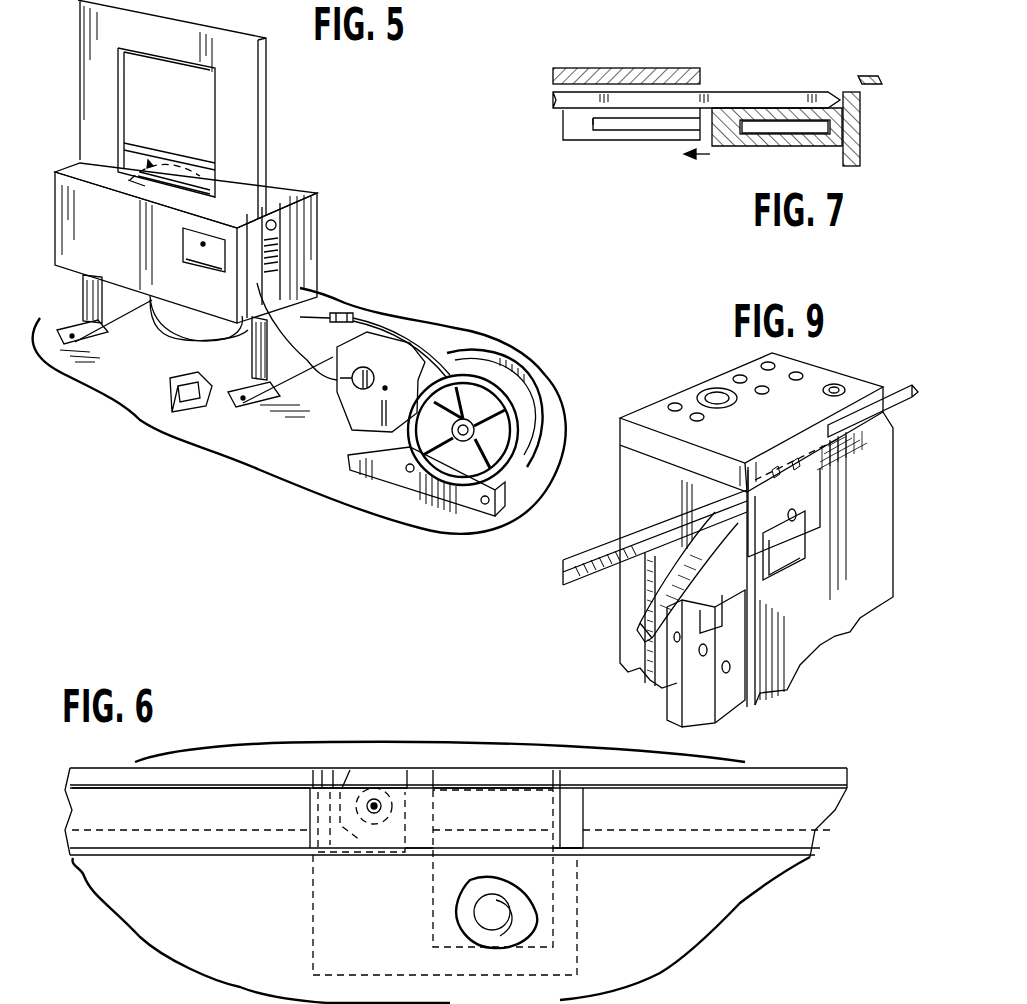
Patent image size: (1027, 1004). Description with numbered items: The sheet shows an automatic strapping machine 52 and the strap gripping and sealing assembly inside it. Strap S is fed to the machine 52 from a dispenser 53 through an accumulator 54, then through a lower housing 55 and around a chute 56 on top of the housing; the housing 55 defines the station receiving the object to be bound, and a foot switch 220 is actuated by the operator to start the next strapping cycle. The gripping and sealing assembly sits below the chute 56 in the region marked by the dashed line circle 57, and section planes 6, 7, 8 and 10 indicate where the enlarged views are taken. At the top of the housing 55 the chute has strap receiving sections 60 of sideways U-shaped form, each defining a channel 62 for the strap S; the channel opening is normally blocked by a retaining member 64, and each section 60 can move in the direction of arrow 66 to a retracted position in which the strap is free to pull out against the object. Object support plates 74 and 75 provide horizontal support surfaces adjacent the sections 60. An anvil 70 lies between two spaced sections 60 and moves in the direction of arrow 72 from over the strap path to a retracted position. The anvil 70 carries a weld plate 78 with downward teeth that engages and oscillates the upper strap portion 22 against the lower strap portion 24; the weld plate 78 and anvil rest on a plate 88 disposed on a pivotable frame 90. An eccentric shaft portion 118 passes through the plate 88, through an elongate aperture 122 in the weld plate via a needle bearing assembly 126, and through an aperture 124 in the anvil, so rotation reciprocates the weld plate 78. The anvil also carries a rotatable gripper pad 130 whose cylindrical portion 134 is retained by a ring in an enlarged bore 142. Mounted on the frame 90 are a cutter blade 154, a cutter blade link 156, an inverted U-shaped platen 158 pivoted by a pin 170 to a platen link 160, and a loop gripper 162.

In FIG. 5, the automatic strapping machine 52 is at (62, 78).
In FIG. 5, the dispenser 53 is at (540, 300).
In FIG. 5, the accumulator 54 is at (346, 417).
In FIG. 5, the lower housing 55 is at (44, 203).
In FIG. 5, the chute 56 is at (272, 112).
In FIG. 5, the dashed line circle 57 is at (145, 192).
In FIG. 7, the strap receiving section 60 is at (765, 100).
In FIG. 6, the strap receiving section 60 is at (130, 843).
In FIG. 7, the slot or channel 62 is at (860, 112).
In FIG. 7, the retaining member 64 is at (862, 135).
In FIG. 6, the retaining member 64 is at (225, 762).
In FIG. 7, the arrow 66 is at (728, 182).
In FIG. 5, the anvil 70 is at (170, 200).
In FIG. 7, the anvil 70 is at (716, 85).
In FIG. 9, the anvil 70 is at (653, 404).
In FIG. 6, the anvil 70 is at (308, 896).
In FIG. 6, the arrow 72 is at (413, 995).
In FIG. 5, the object support plate 74 is at (195, 208).
In FIG. 7, the object support plate 74 is at (650, 70).
In FIG. 6, the object support plate 74 is at (742, 902).
In FIG. 5, the object support plate 75 is at (162, 158).
In FIG. 7, the object support plate 75 is at (863, 76).
In FIG. 6, the object support plate 75 is at (320, 748).
In FIG. 6, the weld plate 78 is at (515, 955).
In FIG. 9, the plate 88 is at (622, 448).
In FIG. 9, the frame 90 is at (618, 505).
In FIG. 9, the upwardly projecting shaft portion 118 is at (714, 392).
In FIG. 6, the elongate aperture 122 is at (515, 912).
In FIG. 9, the aperture 124 is at (718, 392).
In FIG. 6, the needle bearing assembly 126 is at (505, 930).
In FIG. 6, the rotatable gripper pad 130 is at (396, 796).
In FIG. 6, the upwardly extending cylindrical portion 134 is at (378, 800).
In FIG. 6, the enlarged diameter bore 142 is at (372, 800).
In FIG. 9, the cutter knife or blade 154 is at (790, 692).
In FIG. 9, the cutter blade link 156 is at (670, 706).
In FIG. 9, the platen 158 is at (815, 530).
In FIG. 9, the platen link 160 is at (810, 668).
In FIG. 9, the loop gripper 162 is at (855, 630).
In FIG. 9, the pin 170 is at (795, 514).
In FIG. 9, the upper strap portion 22 is at (600, 548).
In FIG. 9, the lower strap portion 24 is at (630, 626).
In FIG. 5, the foot switch 220 is at (190, 372).
In FIG. 5, the strap S is at (338, 380).
In FIG. 7, the strap S is at (800, 108).
In FIG. 9, the strap S is at (904, 396).
In FIG. 5, the plane 6— 6 is at (142, 170).
In FIG. 6, the plane 7— 7 is at (590, 742).
In FIG. 6, the plane 8— 8 is at (97, 845).
In FIG. 6, the plane 10— 10 is at (462, 726).